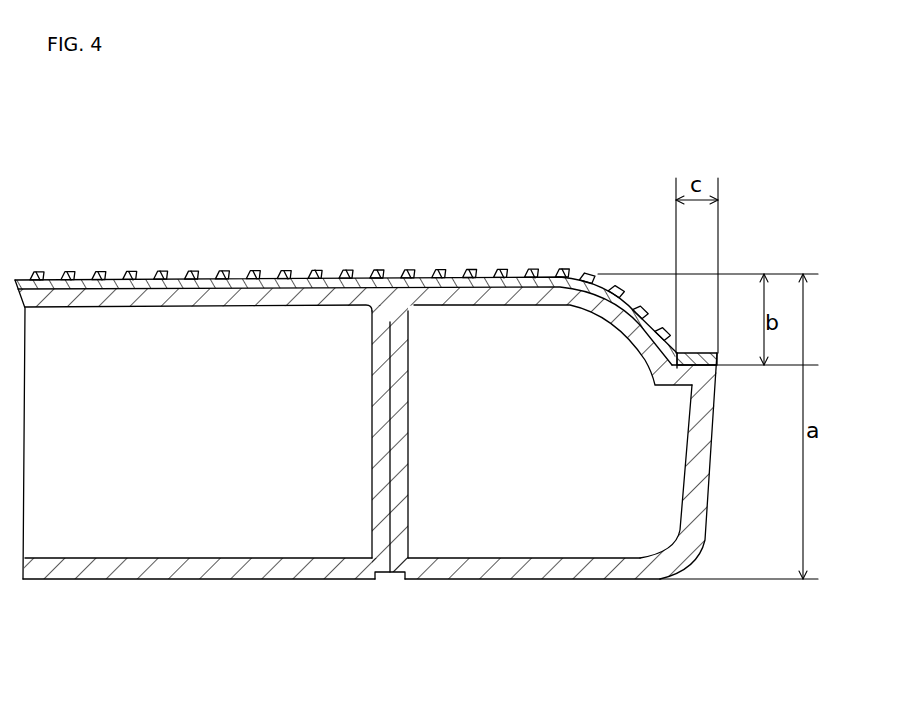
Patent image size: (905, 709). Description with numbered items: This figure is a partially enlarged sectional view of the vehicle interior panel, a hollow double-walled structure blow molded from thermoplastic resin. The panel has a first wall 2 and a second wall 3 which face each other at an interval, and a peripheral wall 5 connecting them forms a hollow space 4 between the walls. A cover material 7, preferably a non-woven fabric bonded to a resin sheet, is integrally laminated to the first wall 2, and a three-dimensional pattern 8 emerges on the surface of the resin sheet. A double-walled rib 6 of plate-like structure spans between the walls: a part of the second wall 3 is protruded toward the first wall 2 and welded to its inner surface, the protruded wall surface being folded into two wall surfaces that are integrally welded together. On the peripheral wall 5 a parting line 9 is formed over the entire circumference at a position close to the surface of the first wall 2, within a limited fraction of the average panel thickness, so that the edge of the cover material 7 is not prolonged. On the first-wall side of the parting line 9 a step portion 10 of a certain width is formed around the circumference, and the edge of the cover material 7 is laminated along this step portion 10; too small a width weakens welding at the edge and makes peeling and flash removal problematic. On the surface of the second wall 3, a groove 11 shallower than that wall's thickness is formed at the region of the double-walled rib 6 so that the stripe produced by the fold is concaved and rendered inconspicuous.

The first wall 2 is at (453, 277).
The second wall 3 is at (186, 581).
The hollow space 4 is at (186, 391).
The peripheral wall 5 is at (712, 452).
The double-walled rib 6 is at (408, 463).
The cover material 7 is at (518, 271).
The three-dimensional pattern 8 is at (376, 272).
The parting line 9 is at (720, 367).
The step portion 10 is at (691, 351).
The groove 11 is at (388, 581).